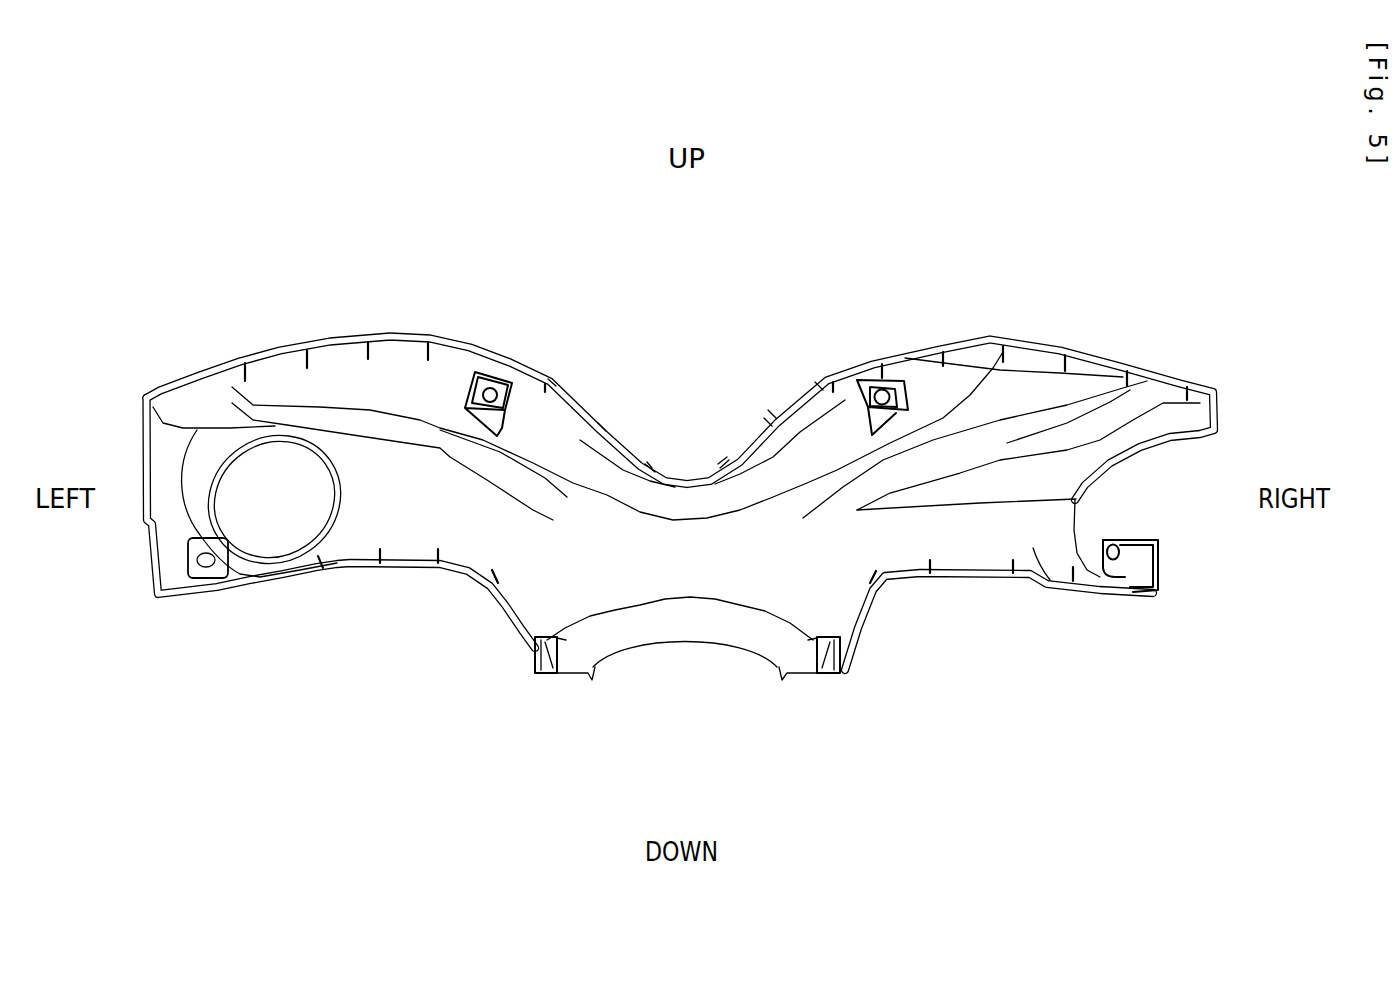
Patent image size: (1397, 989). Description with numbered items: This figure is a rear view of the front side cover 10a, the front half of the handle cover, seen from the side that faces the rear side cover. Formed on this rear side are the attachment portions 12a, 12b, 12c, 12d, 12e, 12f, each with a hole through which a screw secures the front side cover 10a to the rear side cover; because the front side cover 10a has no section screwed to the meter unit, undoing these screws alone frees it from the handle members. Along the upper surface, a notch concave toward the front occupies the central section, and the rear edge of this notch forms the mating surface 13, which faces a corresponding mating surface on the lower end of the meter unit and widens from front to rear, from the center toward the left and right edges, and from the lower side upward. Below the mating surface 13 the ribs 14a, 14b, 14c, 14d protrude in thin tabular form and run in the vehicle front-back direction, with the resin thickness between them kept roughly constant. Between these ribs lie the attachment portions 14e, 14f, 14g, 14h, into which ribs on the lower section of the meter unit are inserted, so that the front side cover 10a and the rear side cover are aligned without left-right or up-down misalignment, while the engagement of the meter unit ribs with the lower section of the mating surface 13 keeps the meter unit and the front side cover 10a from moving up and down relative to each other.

The front side cover 10a is at (380, 288).
The attachment portion 12a is at (490, 388).
The attachment portion 12b is at (884, 389).
The attachment portion 12c is at (542, 673).
The attachment portion 12d is at (830, 673).
The attachment portion 12e is at (206, 570).
The attachment portion 12f is at (1114, 542).
The mating surface 13 is at (768, 423).
The rib 14a is at (553, 378).
The rib 14b is at (650, 466).
The rib 14c is at (723, 464).
The rib 14d is at (820, 386).
The attachment portion 14e is at (602, 426).
The attachment portion 14f is at (650, 465).
The attachment portion 14g is at (722, 464).
The attachment portion 14h is at (772, 413).